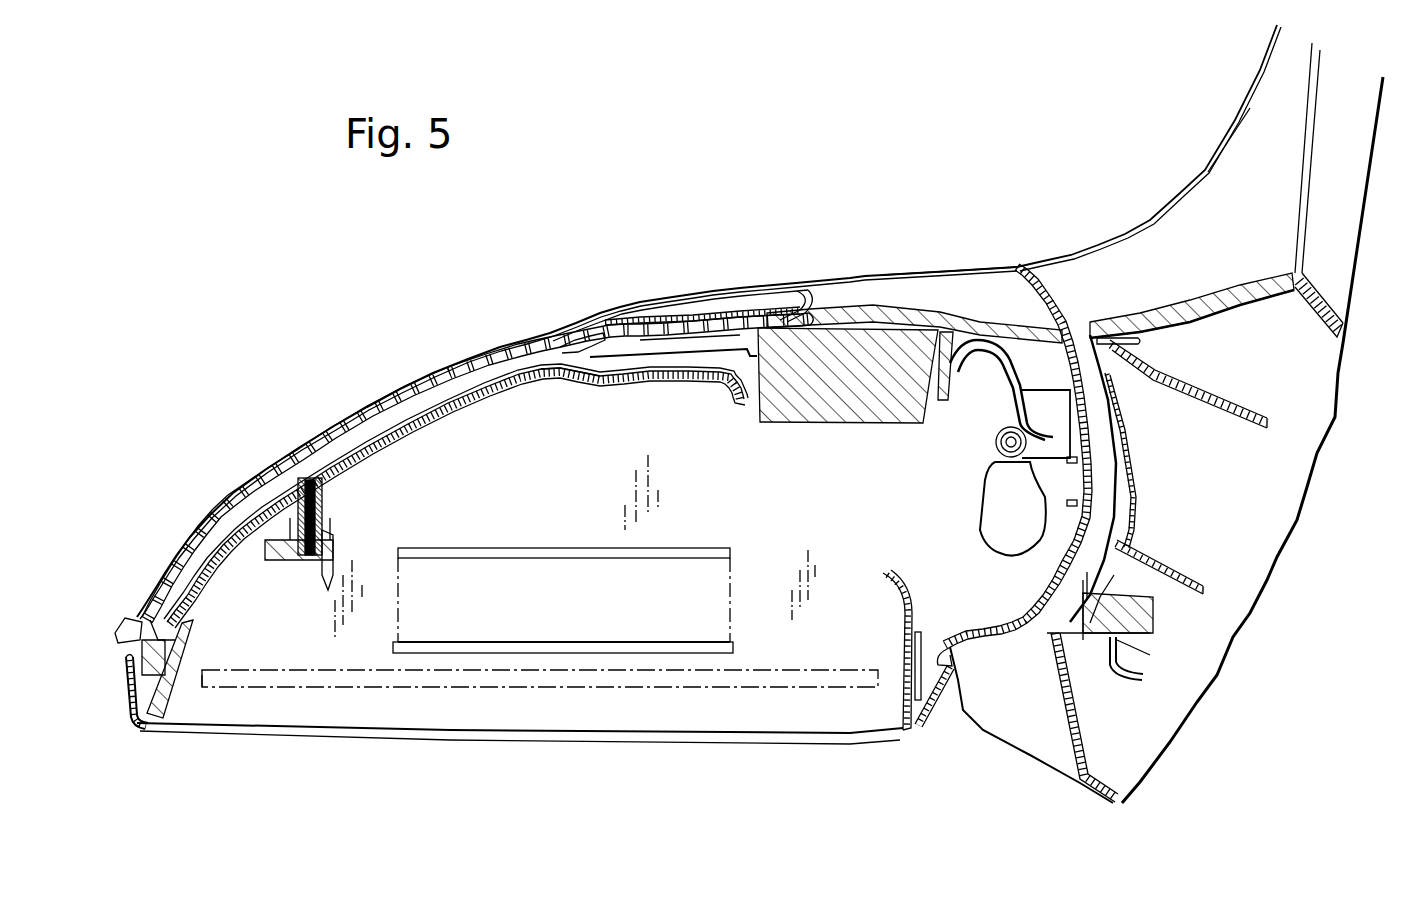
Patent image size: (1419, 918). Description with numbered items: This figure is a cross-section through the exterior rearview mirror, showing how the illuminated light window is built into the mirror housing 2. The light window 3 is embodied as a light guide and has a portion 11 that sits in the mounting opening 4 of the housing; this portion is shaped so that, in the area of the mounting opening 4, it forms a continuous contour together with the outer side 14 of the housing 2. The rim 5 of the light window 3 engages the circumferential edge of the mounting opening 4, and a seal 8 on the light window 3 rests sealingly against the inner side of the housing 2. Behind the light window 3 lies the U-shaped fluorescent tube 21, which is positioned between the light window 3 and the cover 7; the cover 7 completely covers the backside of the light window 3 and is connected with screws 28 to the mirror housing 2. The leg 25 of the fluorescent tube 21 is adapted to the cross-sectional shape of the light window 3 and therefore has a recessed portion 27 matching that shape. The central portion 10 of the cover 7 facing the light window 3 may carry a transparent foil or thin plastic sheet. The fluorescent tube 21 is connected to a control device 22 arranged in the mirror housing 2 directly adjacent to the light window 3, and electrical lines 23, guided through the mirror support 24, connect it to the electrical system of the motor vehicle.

The mirror housing 2 is at (930, 297).
The light window 3 is at (477, 352).
The mounting opening 4 is at (600, 333).
The rim 5 is at (697, 318).
The cover 7 is at (465, 413).
The seal 8 is at (135, 620).
The central portion 10 is at (412, 417).
The portion 11 is at (348, 415).
The outer side 14 is at (970, 270).
The fluorescent tube 21 is at (545, 367).
The control device 22 is at (835, 330).
The electrical lines 23 is at (1020, 433).
The mirror support 24 is at (1147, 247).
The leg 25 is at (507, 377).
The recessed portion 27 is at (590, 363).
The screws 28 is at (323, 515).